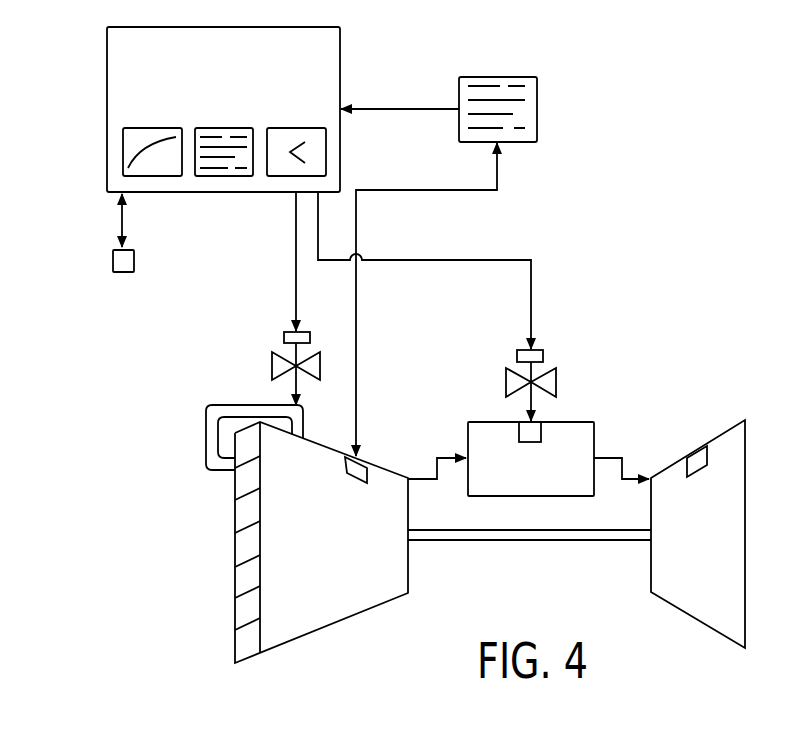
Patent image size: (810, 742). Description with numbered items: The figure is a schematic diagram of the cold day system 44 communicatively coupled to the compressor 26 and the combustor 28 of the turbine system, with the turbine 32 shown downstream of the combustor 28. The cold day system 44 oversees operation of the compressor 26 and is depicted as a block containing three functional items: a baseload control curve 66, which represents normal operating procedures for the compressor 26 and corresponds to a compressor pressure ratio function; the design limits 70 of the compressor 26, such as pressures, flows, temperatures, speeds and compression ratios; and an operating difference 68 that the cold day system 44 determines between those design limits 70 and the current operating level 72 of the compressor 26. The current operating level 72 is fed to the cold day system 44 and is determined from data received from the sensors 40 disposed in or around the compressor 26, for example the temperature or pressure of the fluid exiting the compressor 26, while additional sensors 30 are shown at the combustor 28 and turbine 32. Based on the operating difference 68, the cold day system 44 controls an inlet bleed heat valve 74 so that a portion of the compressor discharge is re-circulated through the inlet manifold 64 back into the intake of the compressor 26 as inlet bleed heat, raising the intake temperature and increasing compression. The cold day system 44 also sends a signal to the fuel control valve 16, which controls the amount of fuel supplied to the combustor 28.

The cold day system 44 is at (107, 108).
The baseload control curve 66 is at (150, 128).
The design limits 70 is at (223, 128).
The operating difference 68 is at (293, 128).
The current operating level 72 is at (537, 110).
The fuel nozzle 30 is at (113, 259).
The inlet bleed heat valve 74 is at (272, 365).
The fuel control valve 16 is at (506, 383).
The inlet manifold 64 is at (206, 440).
The compressor 26 is at (335, 623).
The sensor 40 is at (372, 471).
The combustion system 28 is at (530, 497).
The turbine 32 is at (698, 622).